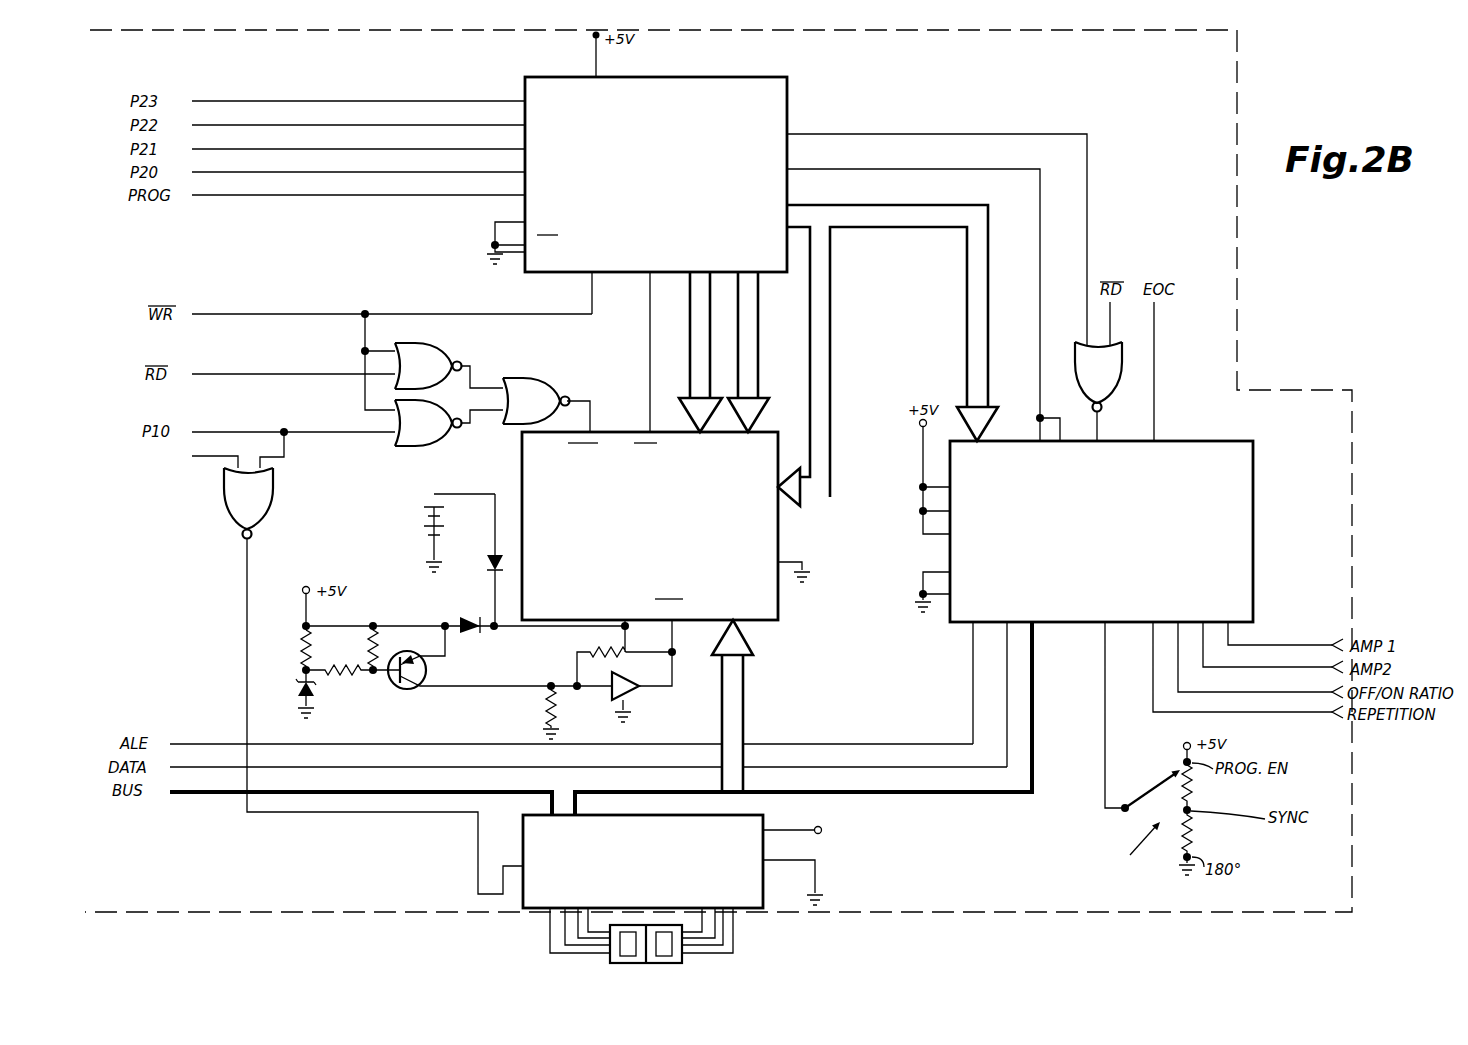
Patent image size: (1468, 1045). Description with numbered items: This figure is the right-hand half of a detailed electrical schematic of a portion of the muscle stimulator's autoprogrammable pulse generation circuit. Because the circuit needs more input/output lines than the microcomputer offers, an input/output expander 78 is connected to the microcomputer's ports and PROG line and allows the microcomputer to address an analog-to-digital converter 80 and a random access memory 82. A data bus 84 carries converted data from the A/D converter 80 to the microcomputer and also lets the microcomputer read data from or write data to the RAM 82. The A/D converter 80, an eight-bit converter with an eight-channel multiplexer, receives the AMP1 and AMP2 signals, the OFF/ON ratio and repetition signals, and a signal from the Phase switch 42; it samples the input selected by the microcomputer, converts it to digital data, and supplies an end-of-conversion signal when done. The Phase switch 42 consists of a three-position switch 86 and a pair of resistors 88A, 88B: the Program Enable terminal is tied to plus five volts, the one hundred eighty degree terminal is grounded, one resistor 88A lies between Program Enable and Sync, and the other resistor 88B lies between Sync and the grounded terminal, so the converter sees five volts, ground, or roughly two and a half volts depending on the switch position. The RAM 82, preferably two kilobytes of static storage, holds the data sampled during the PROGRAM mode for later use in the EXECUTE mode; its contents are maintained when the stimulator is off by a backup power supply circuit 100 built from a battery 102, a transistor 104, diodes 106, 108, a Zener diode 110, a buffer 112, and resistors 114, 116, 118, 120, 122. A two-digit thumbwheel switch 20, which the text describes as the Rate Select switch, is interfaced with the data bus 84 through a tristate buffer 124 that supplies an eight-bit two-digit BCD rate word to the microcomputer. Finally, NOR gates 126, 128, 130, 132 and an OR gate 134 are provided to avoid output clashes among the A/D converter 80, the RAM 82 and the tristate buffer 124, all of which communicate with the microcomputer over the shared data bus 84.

The input/output (I/O) expander 78 is at (680, 78).
The analog-to-digital converter 80 is at (955, 623).
The random access memory 82 is at (779, 617).
The data bus 84 is at (884, 796).
The three-position switch 86 is at (1142, 791).
The resistor 88A is at (1200, 794).
The resistor 88B is at (1200, 834).
The Phase switch 42 is at (1134, 851).
The display 20 is at (740, 940).
The backup power supply circuit 100 is at (366, 556).
The battery 102 is at (422, 520).
The transistor 104 is at (410, 690).
The diode 106 is at (487, 566).
The diode 108 is at (467, 636).
The Zener diode 110 is at (315, 697).
The buffer 112 is at (608, 698).
The resistor 114 is at (304, 646).
The resistor 116 is at (370, 646).
The resistor 118 is at (350, 673).
The resistor 120 is at (592, 652).
The resistor 122 is at (548, 706).
The tristate buffer 124 is at (707, 816).
The NOR gate 126 is at (224, 489).
The NOR gate 128 is at (428, 344).
The NOR gate 130 is at (418, 447).
The NOR gate 132 is at (1108, 393).
The OR gate 134 is at (541, 380).